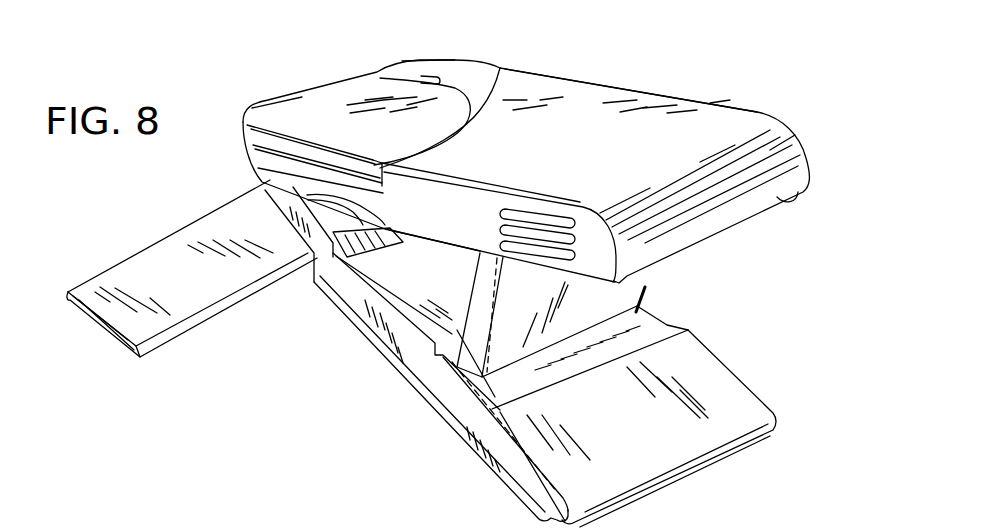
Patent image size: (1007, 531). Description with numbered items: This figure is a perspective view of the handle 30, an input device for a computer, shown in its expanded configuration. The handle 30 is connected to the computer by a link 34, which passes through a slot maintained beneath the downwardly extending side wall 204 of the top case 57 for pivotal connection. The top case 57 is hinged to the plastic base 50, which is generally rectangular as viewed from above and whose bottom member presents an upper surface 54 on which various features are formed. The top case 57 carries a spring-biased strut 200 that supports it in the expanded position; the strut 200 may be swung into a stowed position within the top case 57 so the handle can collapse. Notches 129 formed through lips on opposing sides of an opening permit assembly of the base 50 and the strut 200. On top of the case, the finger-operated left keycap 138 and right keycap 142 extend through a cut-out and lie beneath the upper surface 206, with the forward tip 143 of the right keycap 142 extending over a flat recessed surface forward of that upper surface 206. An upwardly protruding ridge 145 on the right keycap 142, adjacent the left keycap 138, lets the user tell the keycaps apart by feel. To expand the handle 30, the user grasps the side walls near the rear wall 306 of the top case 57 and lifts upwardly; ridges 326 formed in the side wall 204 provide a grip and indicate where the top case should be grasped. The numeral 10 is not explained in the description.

The section line 10 is at (303, 50).
The handle 30 is at (680, 72).
The link 34 is at (163, 245).
The base 50 is at (713, 377).
The upper surface 54 is at (442, 290).
The top case 57 is at (757, 112).
The notches 129 is at (442, 352).
The left keycap 138 is at (277, 100).
The right keycap 142 is at (458, 63).
The forward tip 143 is at (427, 63).
The ridge 145 is at (388, 72).
The strut 200 is at (607, 301).
The side wall 204 is at (458, 217).
The upper surface 206 is at (610, 151).
The rear wall 306 is at (703, 193).
The ridges 326 is at (527, 213).